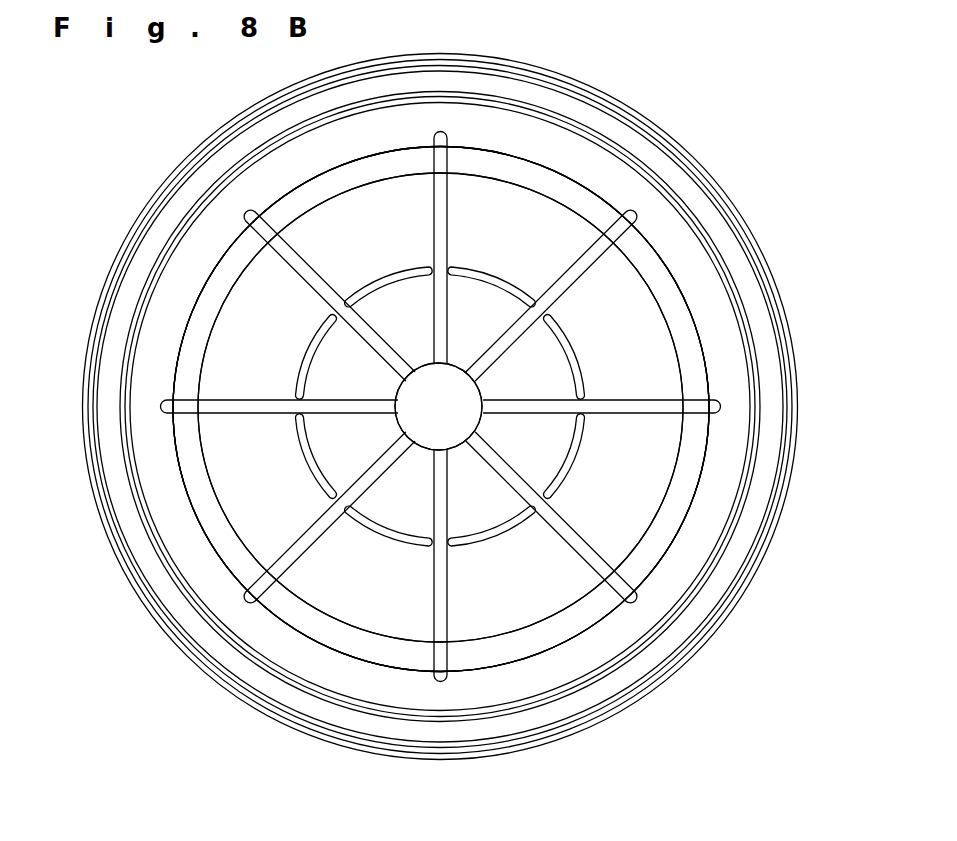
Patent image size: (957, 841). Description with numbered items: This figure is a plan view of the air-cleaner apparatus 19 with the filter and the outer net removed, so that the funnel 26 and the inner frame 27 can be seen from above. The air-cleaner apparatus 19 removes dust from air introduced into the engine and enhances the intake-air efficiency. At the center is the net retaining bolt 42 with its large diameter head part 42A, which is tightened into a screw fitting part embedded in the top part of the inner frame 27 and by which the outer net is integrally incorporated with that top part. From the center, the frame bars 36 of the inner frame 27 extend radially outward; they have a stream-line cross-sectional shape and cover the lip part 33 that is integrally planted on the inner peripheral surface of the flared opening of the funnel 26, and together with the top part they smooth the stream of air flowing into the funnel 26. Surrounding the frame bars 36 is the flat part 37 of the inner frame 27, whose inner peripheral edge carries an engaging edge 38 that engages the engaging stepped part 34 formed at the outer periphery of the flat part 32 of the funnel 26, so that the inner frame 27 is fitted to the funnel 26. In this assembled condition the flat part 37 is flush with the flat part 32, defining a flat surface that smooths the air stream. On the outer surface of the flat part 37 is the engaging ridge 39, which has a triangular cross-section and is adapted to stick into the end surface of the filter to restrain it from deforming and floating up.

The air-cleaner apparatus 19 is at (709, 125).
The funnel 26 is at (692, 477).
The inner frame 27 is at (672, 580).
The flat part 32 is at (183, 463).
The lip part 33 is at (210, 508).
The engaging stepped part 34 is at (222, 565).
The frame bars 36 is at (312, 277).
The flat part 37 is at (703, 262).
The engaging edge 38 is at (183, 341).
The engaging ridge 39 is at (127, 440).
The net retaining bolt 42 is at (492, 378).
The large diameter head part 42A is at (473, 424).